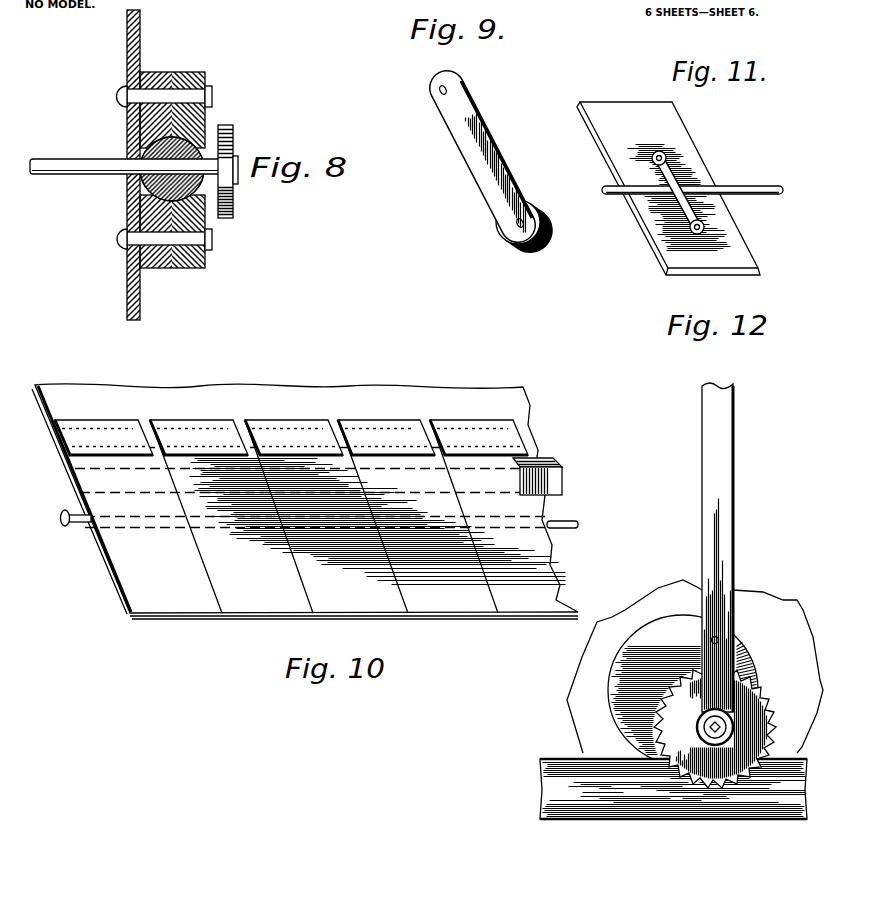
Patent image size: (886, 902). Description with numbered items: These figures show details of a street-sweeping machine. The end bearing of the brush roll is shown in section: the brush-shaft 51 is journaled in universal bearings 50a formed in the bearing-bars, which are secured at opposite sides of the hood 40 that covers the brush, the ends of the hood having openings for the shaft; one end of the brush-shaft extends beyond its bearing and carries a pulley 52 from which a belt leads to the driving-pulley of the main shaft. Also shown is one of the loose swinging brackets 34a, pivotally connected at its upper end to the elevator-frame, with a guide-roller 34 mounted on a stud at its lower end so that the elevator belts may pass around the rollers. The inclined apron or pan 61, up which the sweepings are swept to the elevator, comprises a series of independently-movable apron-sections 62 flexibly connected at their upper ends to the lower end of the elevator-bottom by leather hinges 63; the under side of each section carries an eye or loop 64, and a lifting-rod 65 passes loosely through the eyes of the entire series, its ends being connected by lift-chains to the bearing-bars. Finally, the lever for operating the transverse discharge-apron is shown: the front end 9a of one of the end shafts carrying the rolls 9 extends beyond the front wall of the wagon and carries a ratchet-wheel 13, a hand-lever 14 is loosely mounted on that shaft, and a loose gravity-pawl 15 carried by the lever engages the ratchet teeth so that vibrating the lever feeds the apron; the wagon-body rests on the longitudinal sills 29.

In FIG. 8, the hood 40 is at (141, 43).
In FIG. 8, the universal bearings 50a is at (212, 238).
In FIG. 8, the brush-shaft 51 is at (68, 162).
In FIG. 8, the pulley 52 is at (252, 174).
In FIG. 9, the guide-rollers 34 is at (551, 209).
In FIG. 9, the swinging brackets 34a is at (483, 160).
In FIG. 11, the apron-sections 62 is at (688, 152).
In FIG. 10, the apron-sections 62 is at (491, 524).
In FIG. 11, the eye or loop 64 is at (693, 173).
In FIG. 11, the lifting-rod 65 is at (768, 196).
In FIG. 10, the lifting-rod 65 is at (570, 517).
In FIG. 10, the leather hinges 63 is at (490, 412).
In FIG. 10, the inclined apron or pan 61 is at (305, 511).
In FIG. 12, the hand-lever 14 is at (719, 518).
In FIG. 12, the gravity-pawl 15 is at (743, 657).
In FIG. 12, the ratchet-wheel 13 is at (747, 704).
In FIG. 12, the rolls 9 is at (715, 727).
In FIG. 12, the front end of end shaft 9a is at (702, 728).
In FIG. 12, the longitudinal sills 29 is at (673, 802).